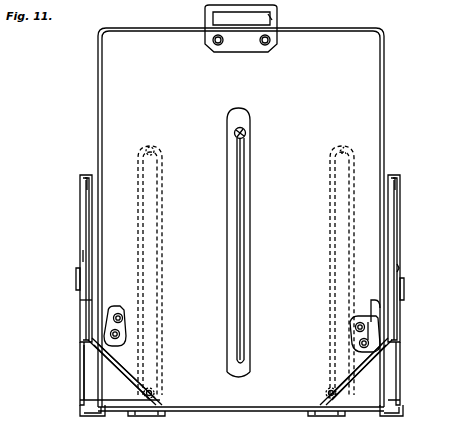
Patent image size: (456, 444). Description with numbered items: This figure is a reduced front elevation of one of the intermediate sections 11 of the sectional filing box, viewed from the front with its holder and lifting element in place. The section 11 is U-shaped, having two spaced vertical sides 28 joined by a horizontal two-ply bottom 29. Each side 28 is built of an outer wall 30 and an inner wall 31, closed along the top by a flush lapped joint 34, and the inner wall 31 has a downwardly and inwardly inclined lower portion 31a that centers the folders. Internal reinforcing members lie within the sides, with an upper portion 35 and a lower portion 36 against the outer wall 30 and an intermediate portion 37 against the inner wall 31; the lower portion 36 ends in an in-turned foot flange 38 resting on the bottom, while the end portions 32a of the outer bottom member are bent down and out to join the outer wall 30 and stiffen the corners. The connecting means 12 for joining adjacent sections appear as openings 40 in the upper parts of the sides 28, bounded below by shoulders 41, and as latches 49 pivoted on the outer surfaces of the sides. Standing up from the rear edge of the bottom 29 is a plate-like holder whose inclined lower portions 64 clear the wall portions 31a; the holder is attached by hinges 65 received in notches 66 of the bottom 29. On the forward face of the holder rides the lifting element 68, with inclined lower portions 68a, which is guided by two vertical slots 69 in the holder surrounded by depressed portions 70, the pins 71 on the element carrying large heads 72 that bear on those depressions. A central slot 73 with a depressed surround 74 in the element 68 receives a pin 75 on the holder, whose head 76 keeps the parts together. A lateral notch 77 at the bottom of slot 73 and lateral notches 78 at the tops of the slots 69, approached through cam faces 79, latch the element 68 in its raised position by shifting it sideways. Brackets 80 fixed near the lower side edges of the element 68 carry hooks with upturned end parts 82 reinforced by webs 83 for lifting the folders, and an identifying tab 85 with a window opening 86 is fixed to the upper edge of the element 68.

The intermediate section 11 is at (74, 350).
The connecting means 12 is at (70, 280).
The side 28 is at (74, 202).
The bottom 29 is at (234, 412).
The outer wall 30 is at (82, 322).
The inner wall 31 is at (92, 230).
The inclined lower portion 31a is at (98, 366).
The end portion 32a is at (92, 418).
The lapped joint 34 is at (90, 180).
The upper portion 35 is at (82, 255).
The lower portion 36 is at (86, 382).
The intermediate portion 37 is at (84, 300).
The foot flange 38 is at (80, 401).
The opening 40 is at (392, 240).
The shoulder 41 is at (398, 268).
The latch 49 is at (405, 285).
The lower portion 64 is at (372, 380).
The hinge 65 is at (158, 416).
The notch 66 is at (322, 416).
The lifting element 68 is at (360, 104).
The inclined lower portion 68a is at (372, 362).
The slot 69 is at (150, 252).
The depressed portion 70 is at (157, 265).
The pin 71 is at (155, 392).
The head 72 is at (326, 392).
The slot 73 is at (241, 150).
The depressed portion 74 is at (244, 170).
The pin 75 is at (227, 139).
The head 76 is at (245, 133).
The lateral notch 77 is at (236, 360).
The lateral notch 78 is at (168, 148).
The cam face 79 is at (158, 142).
The bracket 80 is at (352, 341).
The upturned end part 82 is at (378, 312).
The web 83 is at (372, 330).
The tab 85 is at (212, 15).
The window opening 86 is at (272, 20).